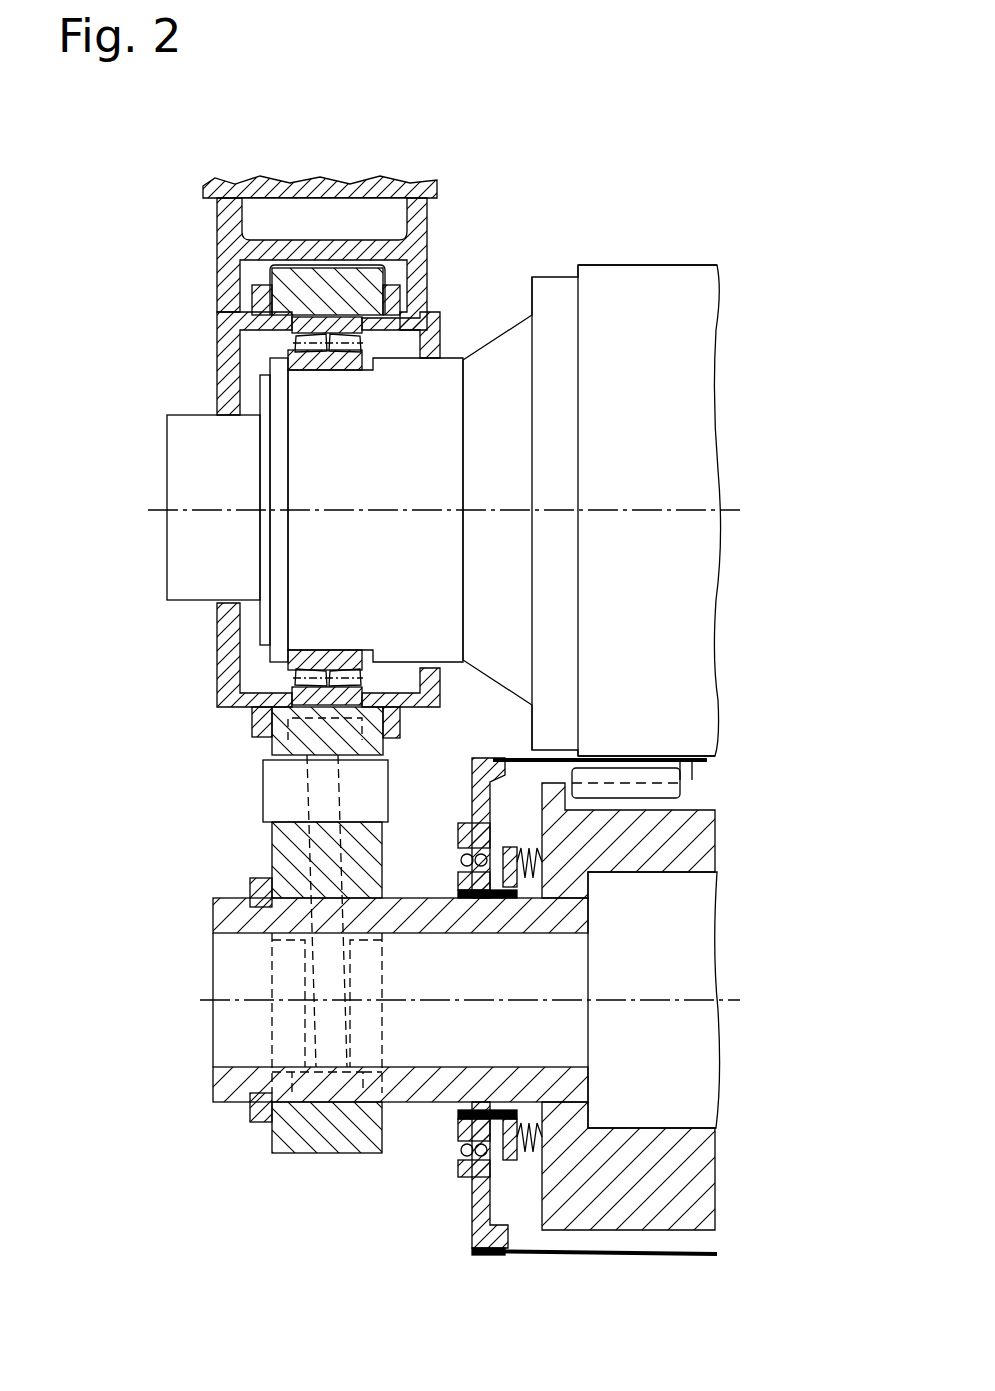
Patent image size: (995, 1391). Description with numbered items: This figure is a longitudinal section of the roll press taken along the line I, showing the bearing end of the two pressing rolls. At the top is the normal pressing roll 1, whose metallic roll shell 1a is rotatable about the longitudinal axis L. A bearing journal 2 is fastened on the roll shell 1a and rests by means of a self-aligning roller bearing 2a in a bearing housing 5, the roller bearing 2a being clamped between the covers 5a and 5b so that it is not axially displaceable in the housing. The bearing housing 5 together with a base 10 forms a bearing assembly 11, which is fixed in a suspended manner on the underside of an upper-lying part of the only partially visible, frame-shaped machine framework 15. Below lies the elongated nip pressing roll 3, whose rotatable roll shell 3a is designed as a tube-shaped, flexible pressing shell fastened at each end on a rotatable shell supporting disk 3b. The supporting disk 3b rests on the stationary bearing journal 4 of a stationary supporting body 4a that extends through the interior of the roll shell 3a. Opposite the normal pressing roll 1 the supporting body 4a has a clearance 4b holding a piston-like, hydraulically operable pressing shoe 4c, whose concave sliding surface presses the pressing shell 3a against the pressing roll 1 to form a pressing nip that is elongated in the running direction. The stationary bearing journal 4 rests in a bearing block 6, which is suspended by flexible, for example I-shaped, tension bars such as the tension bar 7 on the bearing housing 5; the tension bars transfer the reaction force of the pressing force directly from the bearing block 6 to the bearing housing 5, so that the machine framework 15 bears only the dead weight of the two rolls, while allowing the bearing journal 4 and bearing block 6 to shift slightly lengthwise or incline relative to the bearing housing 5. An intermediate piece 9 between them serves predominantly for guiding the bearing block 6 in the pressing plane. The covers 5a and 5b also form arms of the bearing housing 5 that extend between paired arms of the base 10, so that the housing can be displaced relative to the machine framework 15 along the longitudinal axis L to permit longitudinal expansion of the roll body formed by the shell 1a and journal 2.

The normal pressing roll 1 is at (592, 450).
The metallic roll shell 1a is at (613, 283).
The bearing journal 2 is at (172, 440).
The self-aligning roller bearing 2a is at (318, 370).
The elongated nip pressing roll 3 is at (525, 1045).
The roll shell 3a is at (685, 1258).
The shell supporting disk 3b is at (477, 1236).
The stationary bearing journal 4 is at (479, 990).
The stationary supporting body 4a is at (705, 1163).
The clearance 4b is at (700, 810).
The pressing shoe 4c is at (668, 780).
The bearing housing 5 is at (330, 292).
The cover 5a is at (222, 320).
The cover 5b is at (440, 316).
The bearing block 6 is at (288, 848).
The tension bar 7 is at (322, 1028).
The intermediate piece 9 is at (268, 778).
The base 10 is at (222, 228).
The bearing assembly 11 is at (272, 451).
The machine framework 15 is at (222, 180).
The longitudinal axis L is at (730, 510).
The section line I is at (135, 782).